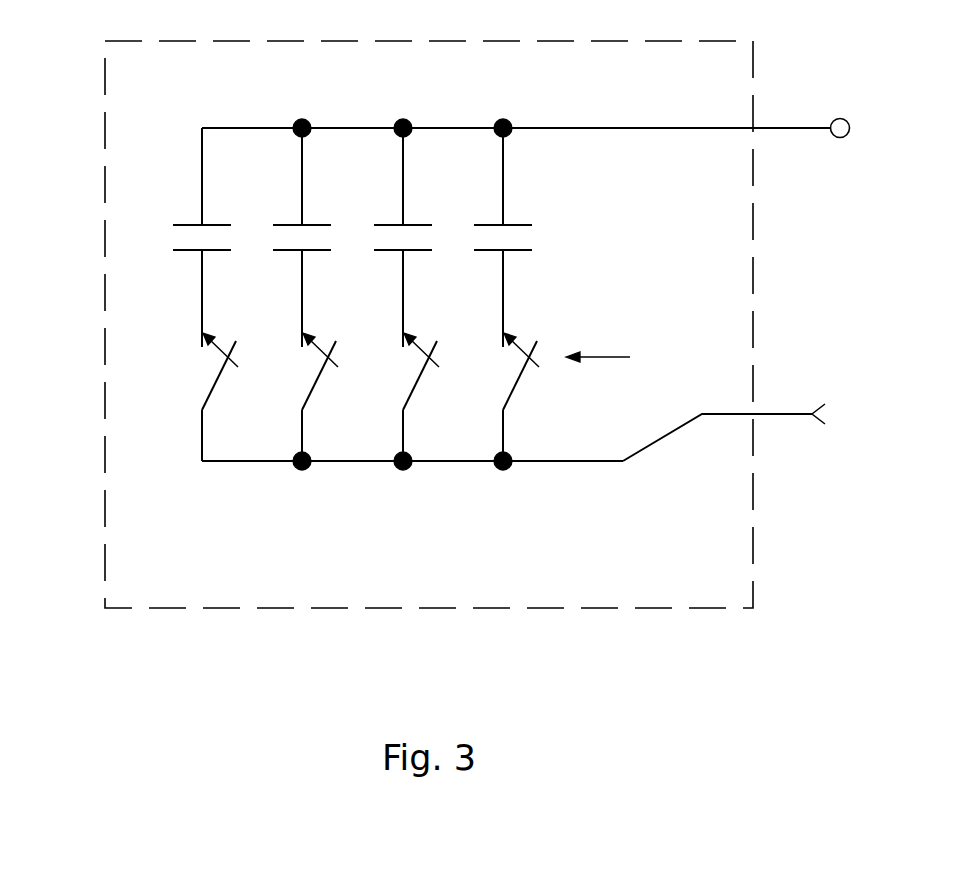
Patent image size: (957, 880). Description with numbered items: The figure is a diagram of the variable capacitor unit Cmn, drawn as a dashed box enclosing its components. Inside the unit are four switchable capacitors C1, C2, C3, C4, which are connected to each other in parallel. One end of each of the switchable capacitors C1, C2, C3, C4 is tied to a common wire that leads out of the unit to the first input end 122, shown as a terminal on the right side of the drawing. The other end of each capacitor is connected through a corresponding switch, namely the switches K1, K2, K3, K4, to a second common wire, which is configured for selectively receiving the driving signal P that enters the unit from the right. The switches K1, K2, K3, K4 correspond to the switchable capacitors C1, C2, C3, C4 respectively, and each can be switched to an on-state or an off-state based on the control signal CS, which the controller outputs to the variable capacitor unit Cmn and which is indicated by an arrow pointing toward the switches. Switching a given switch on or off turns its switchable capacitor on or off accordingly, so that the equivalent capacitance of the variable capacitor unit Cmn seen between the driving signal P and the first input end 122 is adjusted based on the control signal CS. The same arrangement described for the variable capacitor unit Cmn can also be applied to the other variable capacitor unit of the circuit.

The first input end 122 is at (843, 119).
The switchable capacitor C1 is at (207, 237).
The switchable capacitor C2 is at (307, 233).
The switchable capacitor C3 is at (408, 233).
The switchable capacitor C4 is at (508, 233).
The switch K1 is at (199, 397).
The switch K2 is at (299, 401).
The switch K3 is at (400, 401).
The switch K4 is at (500, 401).
The control signal CS is at (598, 340).
The driving signal P is at (735, 432).
The variable capacitor unit Cmn is at (142, 608).